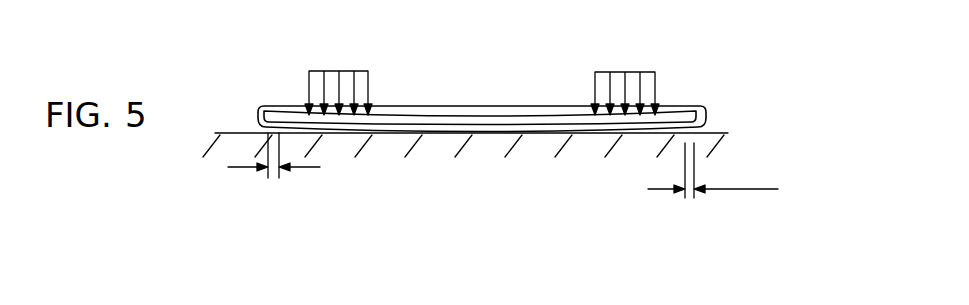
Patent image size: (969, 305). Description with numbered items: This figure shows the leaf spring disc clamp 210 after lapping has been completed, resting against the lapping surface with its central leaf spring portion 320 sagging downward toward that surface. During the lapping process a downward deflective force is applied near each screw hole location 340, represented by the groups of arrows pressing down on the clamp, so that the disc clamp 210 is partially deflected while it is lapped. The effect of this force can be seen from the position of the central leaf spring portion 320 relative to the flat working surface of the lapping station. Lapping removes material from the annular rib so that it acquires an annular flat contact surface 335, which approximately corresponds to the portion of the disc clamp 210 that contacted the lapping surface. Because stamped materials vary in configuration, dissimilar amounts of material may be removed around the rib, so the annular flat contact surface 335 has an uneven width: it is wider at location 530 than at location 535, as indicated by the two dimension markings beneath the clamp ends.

The leaf spring disc clamp 210 is at (758, 108).
The central leaf spring portion 320 is at (485, 122).
The annular flat contact surface 335 is at (258, 123).
The screw hole location 340 is at (373, 78).
The location of wider contact surface 530 is at (270, 178).
The location of narrower contact surface 535 is at (688, 197).